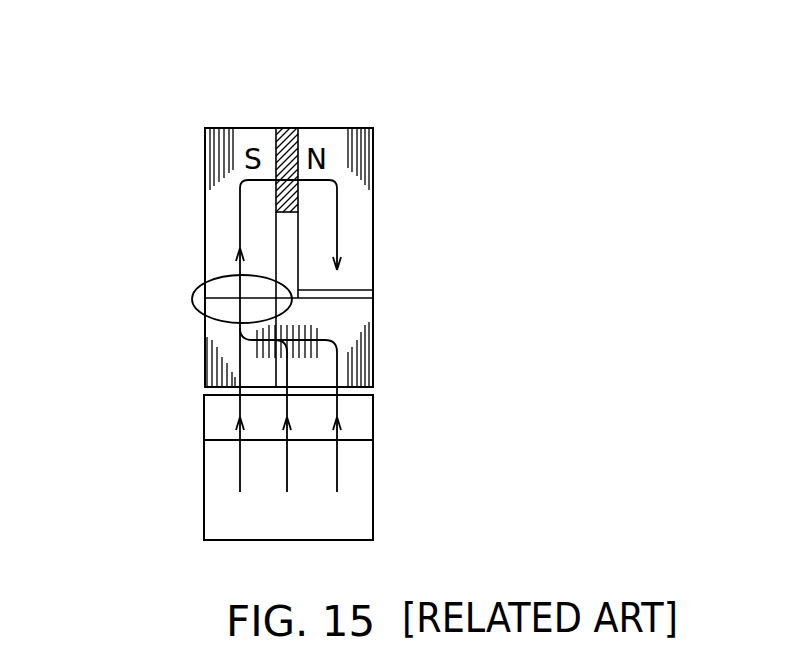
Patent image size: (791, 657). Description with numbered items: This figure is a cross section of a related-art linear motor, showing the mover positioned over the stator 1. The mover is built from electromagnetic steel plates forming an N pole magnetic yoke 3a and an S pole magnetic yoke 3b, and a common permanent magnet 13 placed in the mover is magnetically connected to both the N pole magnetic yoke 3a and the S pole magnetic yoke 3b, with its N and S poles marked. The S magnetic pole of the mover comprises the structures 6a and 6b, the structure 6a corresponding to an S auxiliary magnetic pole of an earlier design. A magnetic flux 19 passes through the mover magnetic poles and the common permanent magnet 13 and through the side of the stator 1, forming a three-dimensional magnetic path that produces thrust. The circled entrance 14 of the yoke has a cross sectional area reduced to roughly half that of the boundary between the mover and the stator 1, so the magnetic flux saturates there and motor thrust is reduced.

The stator 1 is at (221, 526).
The N pole magnetic yoke 3a is at (357, 202).
The S pole magnetic yoke 3b is at (223, 217).
The structure of S magnetic pole 6a is at (343, 323).
The structure of S magnetic pole 6b is at (225, 347).
The common permanent magnet 13 is at (286, 153).
The entrance of yoke 14 is at (192, 296).
The magnetic flux 19 is at (238, 236).